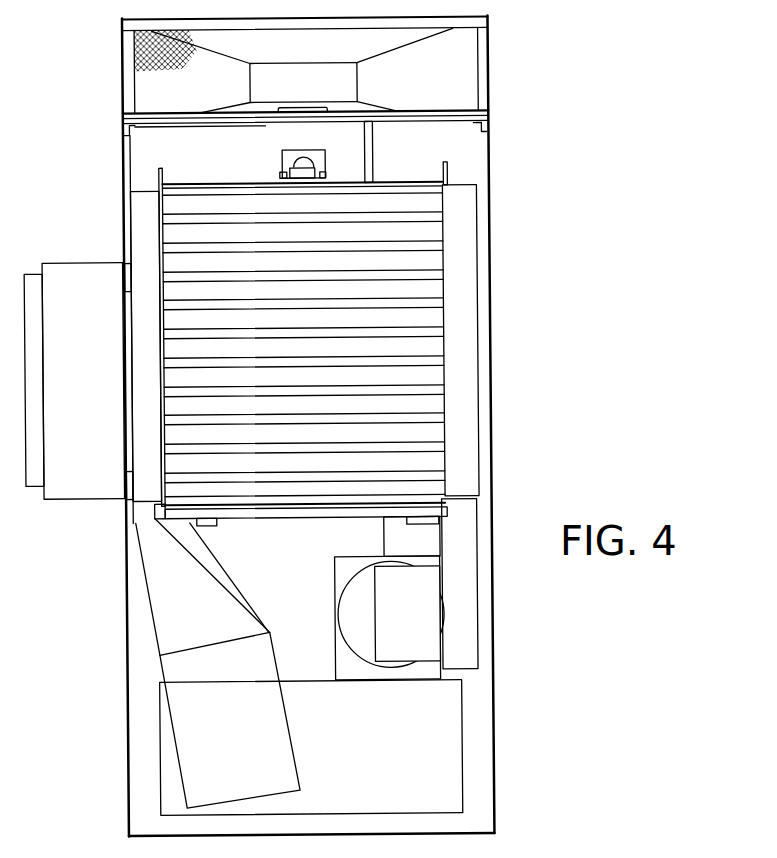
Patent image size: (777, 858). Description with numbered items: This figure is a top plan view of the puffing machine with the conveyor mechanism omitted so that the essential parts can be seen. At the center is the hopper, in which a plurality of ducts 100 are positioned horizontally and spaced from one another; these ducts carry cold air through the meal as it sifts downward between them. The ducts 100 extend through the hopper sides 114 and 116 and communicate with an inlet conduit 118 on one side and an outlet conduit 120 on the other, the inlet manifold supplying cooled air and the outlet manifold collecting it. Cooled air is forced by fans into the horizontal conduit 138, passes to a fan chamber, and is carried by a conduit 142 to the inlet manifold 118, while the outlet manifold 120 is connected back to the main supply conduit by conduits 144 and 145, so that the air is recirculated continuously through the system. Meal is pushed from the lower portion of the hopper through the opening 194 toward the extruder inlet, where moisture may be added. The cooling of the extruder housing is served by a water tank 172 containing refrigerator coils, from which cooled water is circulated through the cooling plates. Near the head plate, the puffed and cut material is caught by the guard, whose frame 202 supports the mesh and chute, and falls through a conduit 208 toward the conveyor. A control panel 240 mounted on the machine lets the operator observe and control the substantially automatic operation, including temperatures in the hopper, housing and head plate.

The frame 202 is at (489, 74).
The conduit 208 is at (310, 91).
The opening 194 is at (283, 163).
The hopper side 114 is at (160, 210).
The inlet conduit 118 is at (143, 253).
The ducts 100 is at (303, 343).
The hopper side 116 is at (444, 290).
The outlet conduit 120 is at (468, 249).
The control panel 240 is at (105, 386).
The water tank 172 is at (295, 579).
The conduit 145 is at (428, 626).
The conduit 144 is at (470, 606).
The conduit 142 is at (238, 741).
The horizontal conduit 138 is at (363, 750).